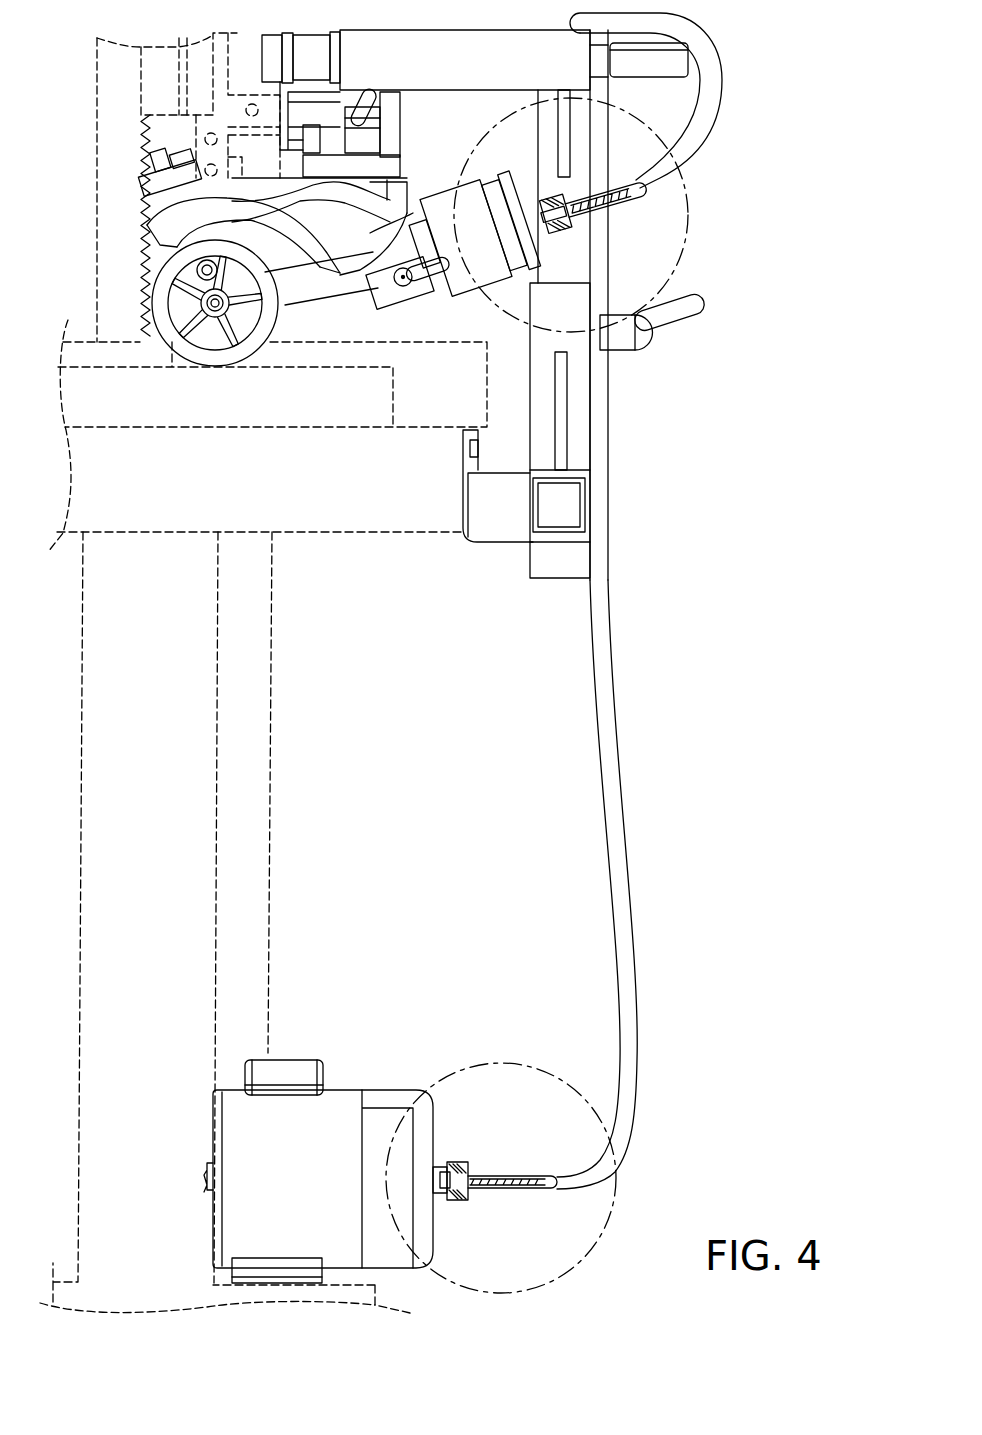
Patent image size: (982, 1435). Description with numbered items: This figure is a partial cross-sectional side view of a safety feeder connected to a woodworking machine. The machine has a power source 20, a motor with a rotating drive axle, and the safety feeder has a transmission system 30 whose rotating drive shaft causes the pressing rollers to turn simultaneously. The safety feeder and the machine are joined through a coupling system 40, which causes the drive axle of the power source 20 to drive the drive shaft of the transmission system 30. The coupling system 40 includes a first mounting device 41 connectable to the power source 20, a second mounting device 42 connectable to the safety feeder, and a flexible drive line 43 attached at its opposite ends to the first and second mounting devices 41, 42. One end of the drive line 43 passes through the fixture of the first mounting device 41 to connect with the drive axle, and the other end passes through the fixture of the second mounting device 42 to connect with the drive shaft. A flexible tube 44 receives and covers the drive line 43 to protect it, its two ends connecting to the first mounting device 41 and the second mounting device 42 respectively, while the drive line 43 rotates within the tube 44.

The power source 20 is at (380, 1063).
The transmission system 30 is at (477, 300).
The coupling system 40 is at (766, 612).
The first mounting device 41 is at (460, 1157).
The second mounting device 42 is at (583, 223).
The drive line 43 is at (510, 1190).
The tube 44 is at (633, 1002).